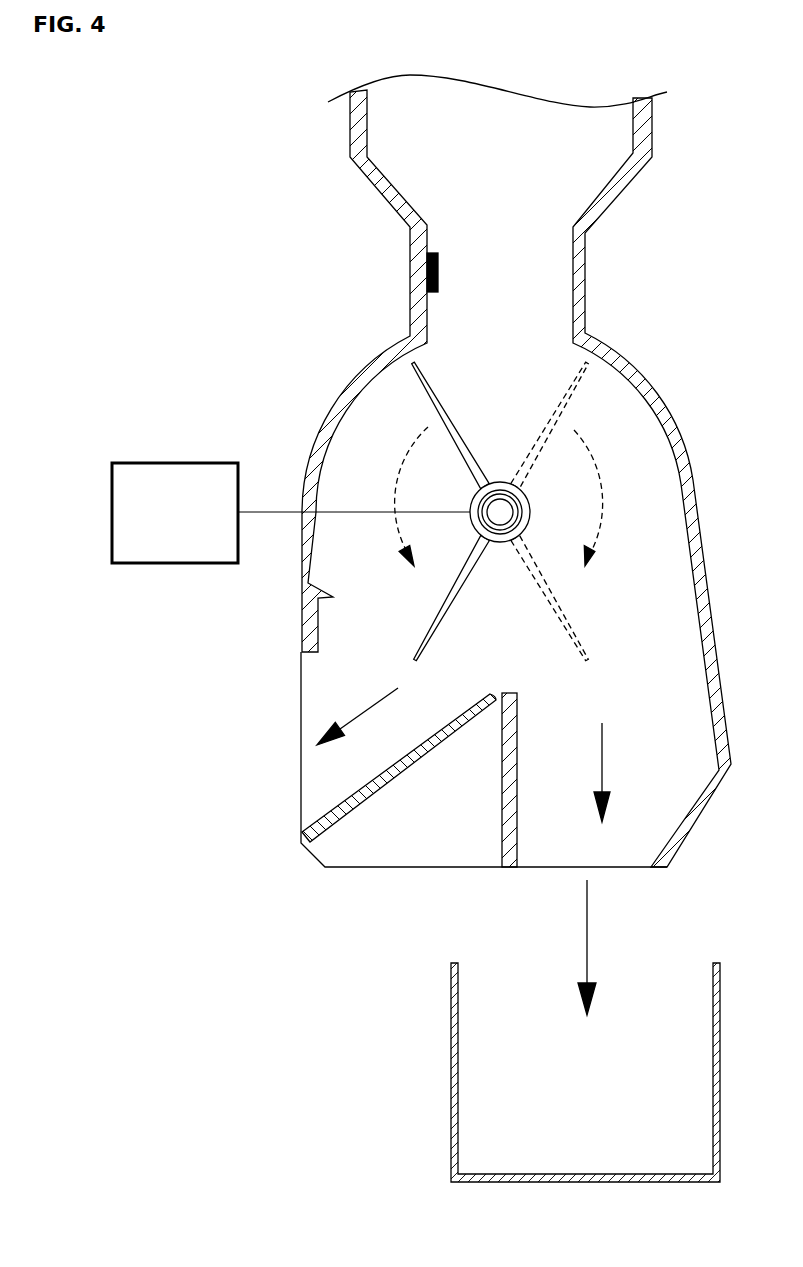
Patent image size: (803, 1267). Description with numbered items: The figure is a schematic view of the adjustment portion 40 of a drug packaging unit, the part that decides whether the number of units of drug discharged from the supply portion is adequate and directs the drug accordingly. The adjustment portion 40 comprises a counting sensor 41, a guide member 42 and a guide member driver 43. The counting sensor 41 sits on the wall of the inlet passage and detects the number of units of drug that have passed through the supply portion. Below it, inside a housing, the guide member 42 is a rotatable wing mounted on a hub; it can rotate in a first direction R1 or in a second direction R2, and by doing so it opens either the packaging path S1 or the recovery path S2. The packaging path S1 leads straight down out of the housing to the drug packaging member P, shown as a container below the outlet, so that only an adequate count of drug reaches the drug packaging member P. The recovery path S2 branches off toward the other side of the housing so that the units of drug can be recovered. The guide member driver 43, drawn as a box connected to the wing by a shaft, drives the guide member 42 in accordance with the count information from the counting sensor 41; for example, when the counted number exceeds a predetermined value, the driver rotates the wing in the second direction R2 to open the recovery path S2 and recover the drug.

The adjustment portion 40 is at (158, 228).
The counting sensor 41 is at (427, 270).
The guide member 42 is at (427, 390).
The guide member driver 43 is at (193, 460).
The drug packaging member P is at (663, 963).
The first direction R1 is at (393, 496).
The second direction R2 is at (608, 498).
The packaging path S1 is at (622, 772).
The recovery path S2 is at (356, 716).